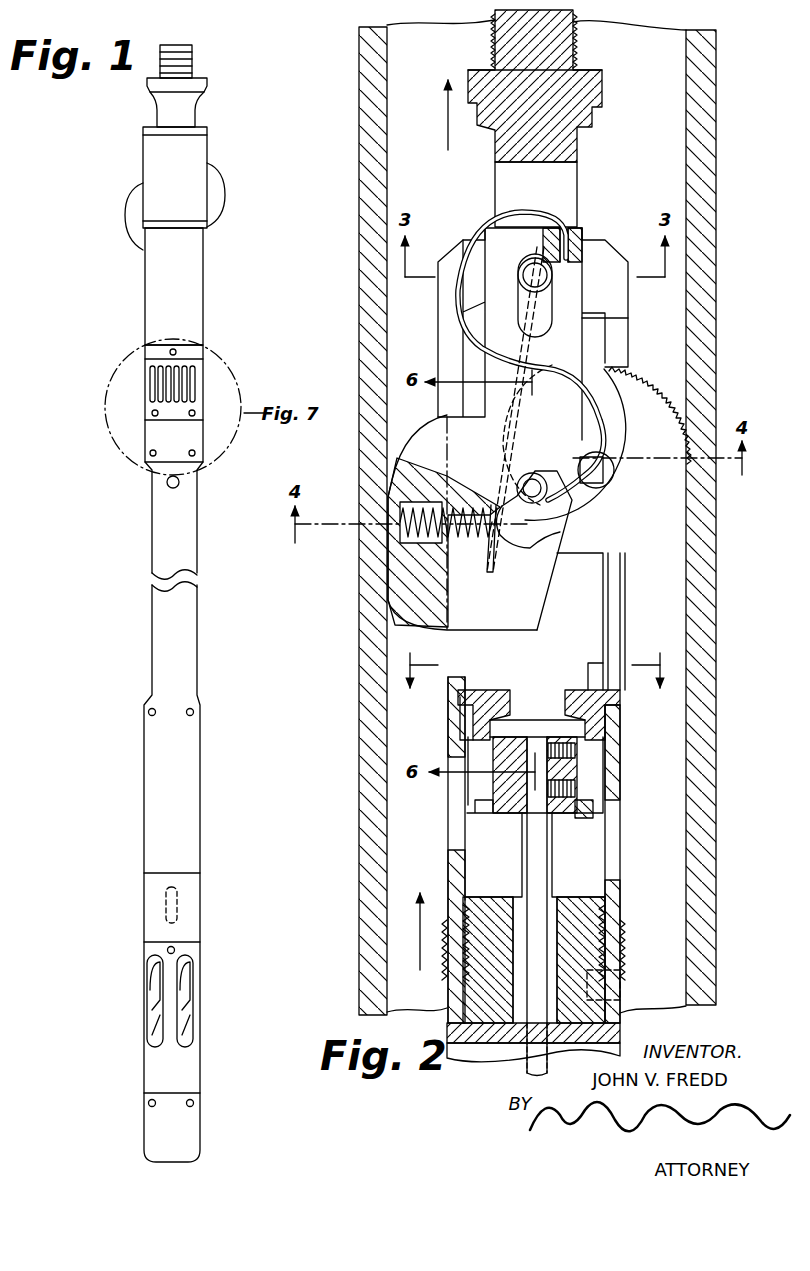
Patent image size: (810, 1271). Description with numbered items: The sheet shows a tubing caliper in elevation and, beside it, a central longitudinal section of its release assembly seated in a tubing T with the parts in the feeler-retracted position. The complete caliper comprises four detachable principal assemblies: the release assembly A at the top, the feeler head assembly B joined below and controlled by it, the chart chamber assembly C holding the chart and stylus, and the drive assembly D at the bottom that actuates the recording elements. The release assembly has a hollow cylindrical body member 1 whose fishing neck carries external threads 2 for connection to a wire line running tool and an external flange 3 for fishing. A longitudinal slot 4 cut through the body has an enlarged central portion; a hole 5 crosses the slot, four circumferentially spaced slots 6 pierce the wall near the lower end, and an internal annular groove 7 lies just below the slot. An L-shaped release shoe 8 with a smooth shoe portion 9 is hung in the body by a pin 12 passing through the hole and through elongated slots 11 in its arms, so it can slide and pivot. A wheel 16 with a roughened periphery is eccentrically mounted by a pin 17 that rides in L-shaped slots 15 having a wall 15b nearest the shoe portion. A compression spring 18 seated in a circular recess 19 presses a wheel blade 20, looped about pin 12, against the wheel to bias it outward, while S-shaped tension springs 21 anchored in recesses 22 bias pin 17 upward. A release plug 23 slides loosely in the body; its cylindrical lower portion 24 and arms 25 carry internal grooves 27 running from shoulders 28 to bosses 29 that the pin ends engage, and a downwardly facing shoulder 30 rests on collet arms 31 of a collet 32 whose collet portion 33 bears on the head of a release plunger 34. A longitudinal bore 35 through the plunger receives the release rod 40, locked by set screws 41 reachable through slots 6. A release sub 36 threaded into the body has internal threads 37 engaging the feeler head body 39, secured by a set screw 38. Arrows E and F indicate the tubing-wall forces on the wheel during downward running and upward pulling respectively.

In FIG. 1, the body member 1 is at (214, 138).
In FIG. 2, the body member 1 is at (617, 250).
In FIG. 1, the external threads 2 is at (195, 62).
In FIG. 2, the external threads 2 is at (562, 43).
In FIG. 2, the external flange 3 is at (603, 90).
In FIG. 2, the longitudinal slot 4 is at (560, 173).
In FIG. 2, the hole 5 is at (535, 683).
In FIG. 2, the circumferentially spaced slots 6 is at (460, 833).
In FIG. 2, the internal annular groove 7 is at (462, 705).
In FIG. 2, the release shoe 8 is at (590, 345).
In FIG. 1, the shoe portion 9 is at (133, 224).
In FIG. 2, the shoe portion 9 is at (412, 430).
In FIG. 2, the elongated slot 11 is at (540, 325).
In FIG. 2, the pin 12 is at (530, 277).
In FIG. 2, the L-shaped slot 15 is at (545, 524).
In FIG. 2, the slot wall 15b is at (502, 540).
In FIG. 1, the wheel 16 is at (220, 212).
In FIG. 2, the wheel 16 is at (574, 442).
In FIG. 2, the pin 17 is at (532, 480).
In FIG. 2, the compression spring 18 is at (404, 535).
In FIG. 2, the circular recess 19 is at (410, 517).
In FIG. 2, the wheel blade 20 is at (488, 575).
In FIG. 2, the S-shaped tension spring 21 is at (500, 230).
In FIG. 2, the recess 22 is at (570, 228).
In FIG. 2, the release plug 23 is at (612, 627).
In FIG. 2, the cylindrical lower portion 24 is at (592, 667).
In FIG. 2, the arms 25 is at (605, 600).
In FIG. 2, the internal groove 27 is at (600, 486).
In FIG. 2, the upwardly facing shoulder 28 is at (585, 560).
In FIG. 2, the internal boss 29 is at (605, 472).
In FIG. 2, the downwardly facing shoulder 30 is at (612, 705).
In FIG. 2, the collet arms 31 is at (472, 790).
In FIG. 2, the collet 32 is at (605, 812).
In FIG. 2, the collet portion 33 is at (583, 820).
In FIG. 2, the release plunger 34 is at (548, 880).
In FIG. 2, the longitudinal bore 35 is at (525, 852).
In FIG. 2, the release sub 36 is at (612, 1019).
In FIG. 2, the internal threads 37 is at (585, 925).
In FIG. 2, the set screw 38 is at (622, 988).
In FIG. 2, the feeler head body 39 is at (470, 1046).
In FIG. 2, the release rod 40 is at (535, 1020).
In FIG. 2, the set screws 41 is at (572, 750).
In FIG. 1, the release assembly A is at (142, 147).
In FIG. 1, the feeler head assembly B is at (144, 303).
In FIG. 1, the chart chamber assembly C is at (150, 647).
In FIG. 1, the drive assembly D is at (145, 997).
In FIG. 2, the arrow E is at (650, 543).
In FIG. 2, the arrow F is at (642, 372).
In FIG. 2, the tubing T is at (705, 370).